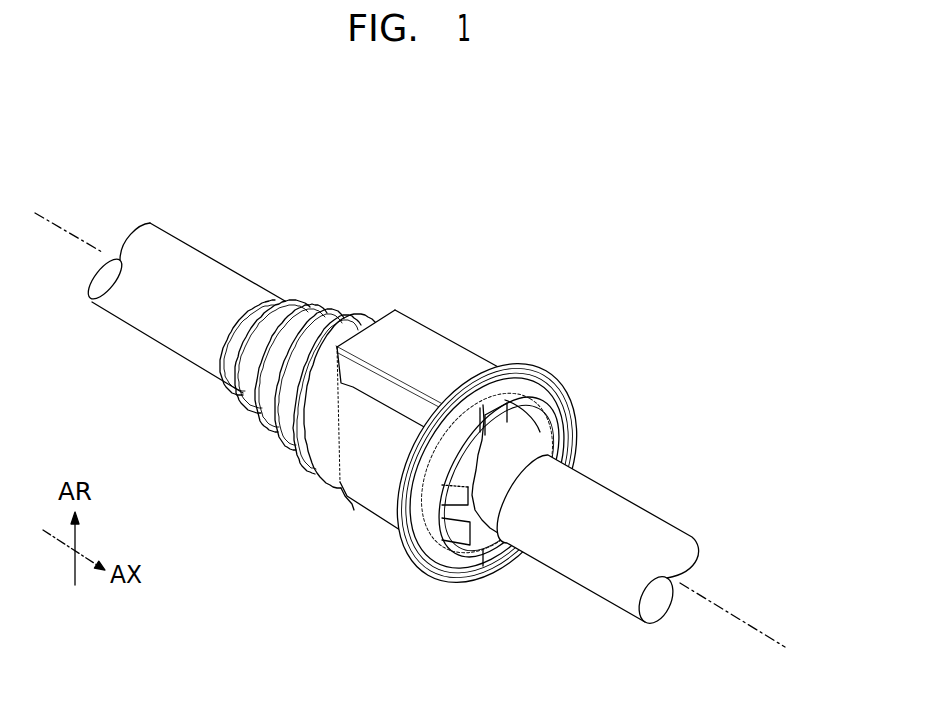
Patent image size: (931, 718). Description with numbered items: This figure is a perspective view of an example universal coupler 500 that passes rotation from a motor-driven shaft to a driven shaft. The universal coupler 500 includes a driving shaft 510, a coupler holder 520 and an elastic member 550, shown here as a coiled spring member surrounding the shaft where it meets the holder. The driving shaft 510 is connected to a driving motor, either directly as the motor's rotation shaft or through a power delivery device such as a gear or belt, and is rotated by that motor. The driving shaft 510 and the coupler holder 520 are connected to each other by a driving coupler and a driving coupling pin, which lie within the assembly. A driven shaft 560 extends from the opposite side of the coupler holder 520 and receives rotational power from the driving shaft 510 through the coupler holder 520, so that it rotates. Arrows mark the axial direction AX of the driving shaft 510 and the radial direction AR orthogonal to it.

The universal coupler 500 is at (410, 419).
The driving shaft 510 is at (195, 252).
The coupler holder 520 is at (438, 340).
The elastic member 550 is at (305, 302).
The driven shaft 560 is at (620, 502).